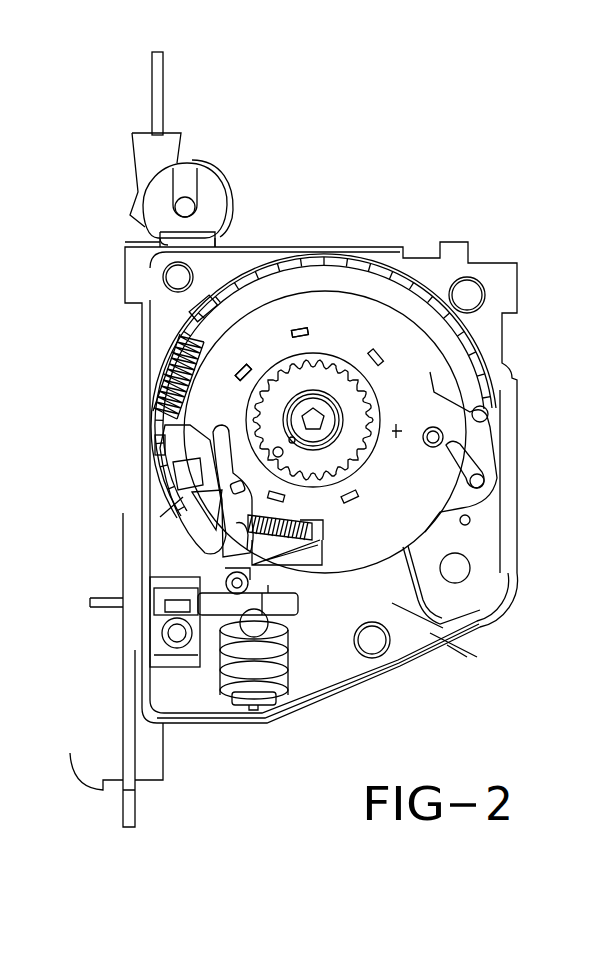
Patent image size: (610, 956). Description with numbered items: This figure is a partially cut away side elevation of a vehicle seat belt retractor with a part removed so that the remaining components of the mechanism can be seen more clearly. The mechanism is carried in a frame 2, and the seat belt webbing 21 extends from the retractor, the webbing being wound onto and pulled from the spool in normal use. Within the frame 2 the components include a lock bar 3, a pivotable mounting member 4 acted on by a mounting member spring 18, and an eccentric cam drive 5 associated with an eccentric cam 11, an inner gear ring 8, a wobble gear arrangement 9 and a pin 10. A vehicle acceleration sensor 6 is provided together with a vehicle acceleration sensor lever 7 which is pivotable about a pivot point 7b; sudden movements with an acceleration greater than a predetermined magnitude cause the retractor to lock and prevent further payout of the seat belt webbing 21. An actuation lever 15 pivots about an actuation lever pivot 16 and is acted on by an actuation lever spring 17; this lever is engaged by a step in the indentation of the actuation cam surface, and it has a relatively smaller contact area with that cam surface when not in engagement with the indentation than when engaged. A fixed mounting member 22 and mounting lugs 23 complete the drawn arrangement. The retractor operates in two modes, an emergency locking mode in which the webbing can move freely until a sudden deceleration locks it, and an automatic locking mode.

The frame 2 is at (492, 270).
The lock bar 3 is at (478, 583).
The pivotable mounting member 4 is at (390, 335).
The eccentric cam drive 5 is at (313, 410).
The vehicle acceleration sensor 6 is at (265, 662).
The vehicle acceleration sensor lever 7 is at (272, 592).
The pivot point 7b is at (230, 578).
The inner gear ring 8 is at (377, 428).
The wobble gear arrangement 9 is at (353, 435).
The pin 10 is at (277, 450).
The eccentric cam 11 is at (323, 410).
The actuation lever 15 is at (218, 438).
The actuation lever pivot 16 is at (233, 487).
The actuation lever spring 17 is at (290, 545).
The mounting member spring 18 is at (163, 377).
The seat belt webbing 21 is at (153, 78).
The fixed mounting member 22 is at (472, 392).
The mounting lugs 23 is at (243, 372).